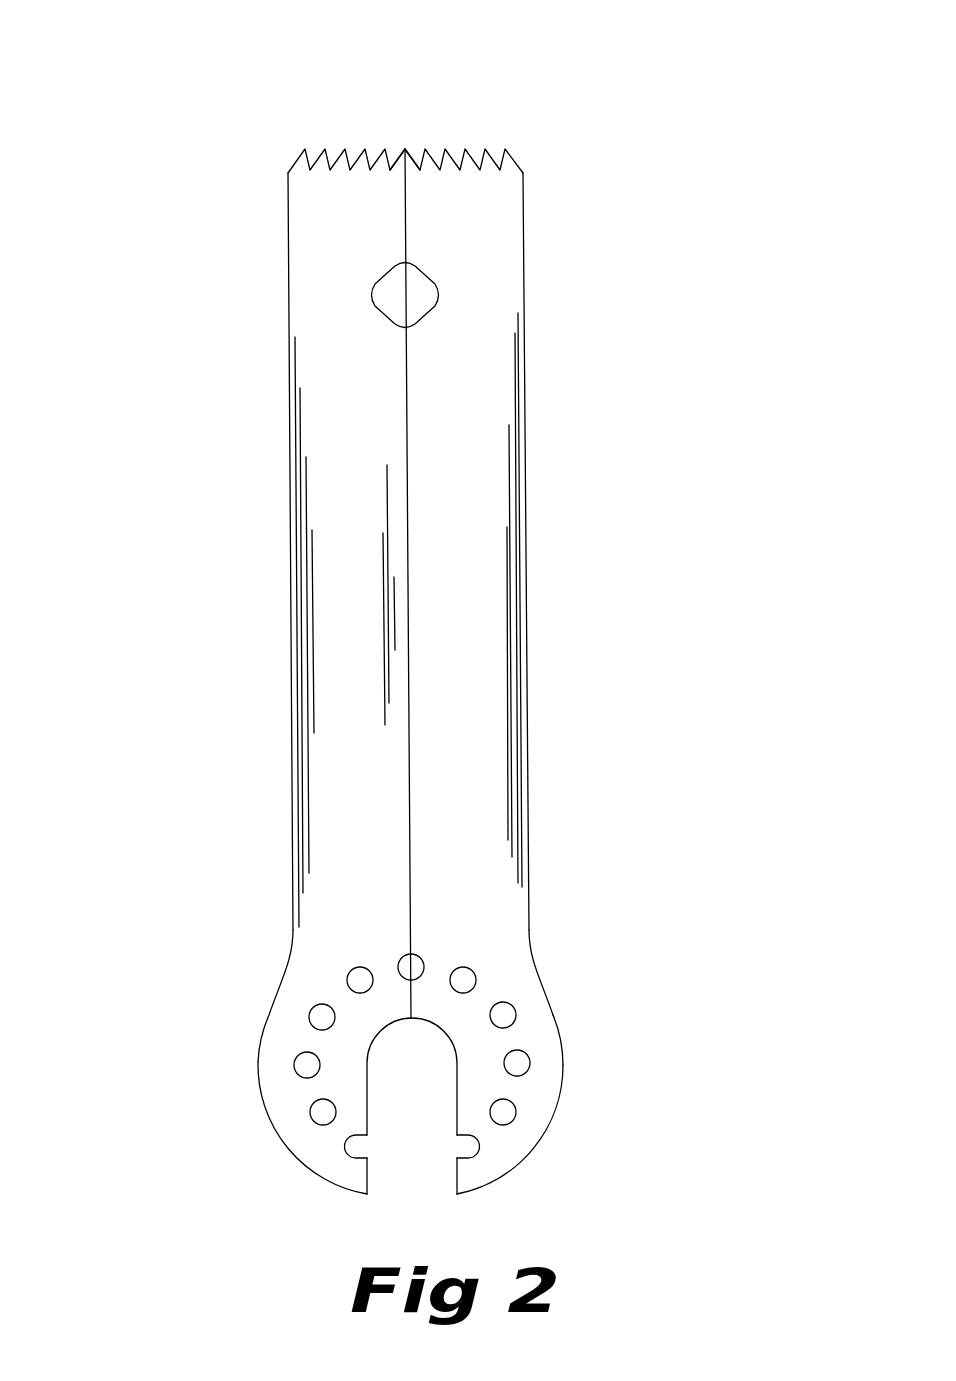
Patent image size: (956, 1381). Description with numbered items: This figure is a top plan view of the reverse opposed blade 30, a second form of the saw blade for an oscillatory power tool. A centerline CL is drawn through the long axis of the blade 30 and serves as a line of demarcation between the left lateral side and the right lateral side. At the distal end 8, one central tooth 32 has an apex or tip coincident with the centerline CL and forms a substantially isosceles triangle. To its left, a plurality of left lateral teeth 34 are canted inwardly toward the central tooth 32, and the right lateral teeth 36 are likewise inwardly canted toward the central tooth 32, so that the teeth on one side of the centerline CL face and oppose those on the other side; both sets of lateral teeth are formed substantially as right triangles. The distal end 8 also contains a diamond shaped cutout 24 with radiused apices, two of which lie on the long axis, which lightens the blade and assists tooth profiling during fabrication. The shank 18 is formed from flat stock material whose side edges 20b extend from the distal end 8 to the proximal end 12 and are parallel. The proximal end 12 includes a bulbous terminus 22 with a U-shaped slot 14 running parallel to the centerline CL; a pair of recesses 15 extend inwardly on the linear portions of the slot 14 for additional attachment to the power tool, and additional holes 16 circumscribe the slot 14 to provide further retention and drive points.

The distal end 8 is at (505, 285).
The proximal end 12 is at (308, 1035).
The U-shaped slot 14 is at (368, 1070).
The recesses 15 is at (368, 1138).
The holes 16 is at (477, 975).
The shank 18 is at (418, 595).
The side edges 20b is at (508, 650).
The bulbous terminus 22 is at (313, 1147).
The diamond shaped cutout 24 is at (420, 266).
The reverse opposed blade 30 is at (243, 372).
The central tooth 32 is at (405, 148).
The left lateral teeth 34 is at (380, 152).
The right lateral teeth 36 is at (472, 148).
The centerline CL is at (408, 535).